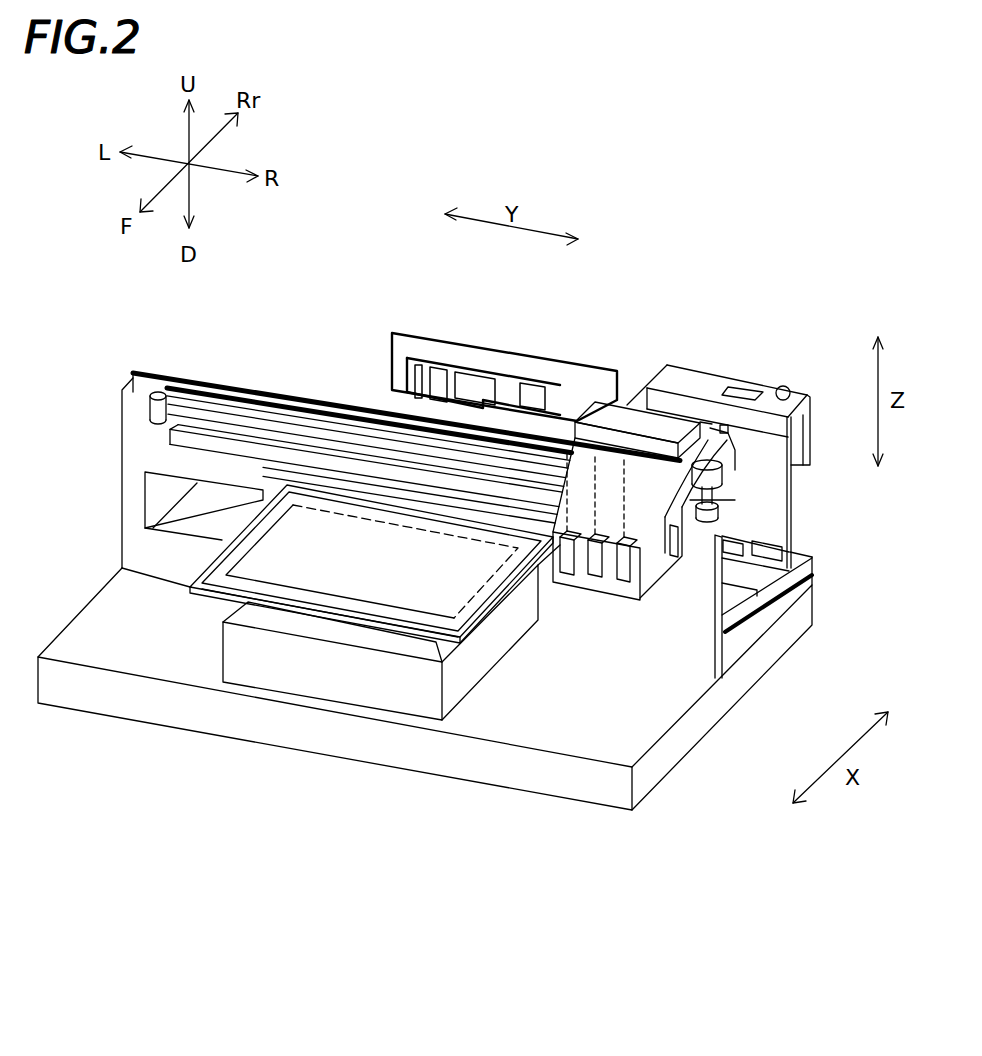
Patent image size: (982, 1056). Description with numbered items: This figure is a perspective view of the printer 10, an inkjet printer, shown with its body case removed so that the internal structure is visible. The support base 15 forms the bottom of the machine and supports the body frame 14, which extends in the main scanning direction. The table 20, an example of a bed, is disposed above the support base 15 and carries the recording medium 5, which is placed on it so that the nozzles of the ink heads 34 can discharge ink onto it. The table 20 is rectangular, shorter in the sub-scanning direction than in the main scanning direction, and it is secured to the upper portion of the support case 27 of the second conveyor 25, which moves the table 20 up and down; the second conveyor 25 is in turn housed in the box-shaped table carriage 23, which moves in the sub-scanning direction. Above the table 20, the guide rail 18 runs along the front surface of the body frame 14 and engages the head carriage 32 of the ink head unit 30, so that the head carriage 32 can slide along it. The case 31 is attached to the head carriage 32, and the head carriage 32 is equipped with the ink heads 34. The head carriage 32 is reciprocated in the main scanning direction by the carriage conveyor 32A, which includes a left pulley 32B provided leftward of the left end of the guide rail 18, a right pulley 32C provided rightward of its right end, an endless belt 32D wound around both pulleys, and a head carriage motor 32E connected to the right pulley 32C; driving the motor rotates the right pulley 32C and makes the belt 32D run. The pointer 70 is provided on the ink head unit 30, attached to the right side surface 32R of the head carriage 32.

The recording medium 5 is at (483, 630).
The printer 10 is at (737, 268).
The body frame 14 is at (120, 498).
The support base 15 is at (553, 797).
The guide rail 18 is at (170, 438).
The table 20 is at (270, 573).
The table carriage 23 is at (403, 682).
The second conveyor 25 is at (333, 672).
The support case 27 is at (285, 606).
The ink head unit 30 is at (715, 552).
The case 31 is at (655, 464).
The head carriage 32 is at (674, 578).
The carriage conveyor 32A is at (217, 398).
The left pulley 32B is at (156, 393).
The right pulley 32C is at (720, 496).
The endless belt 32D is at (308, 438).
The head carriage motor 32E is at (728, 425).
The right side surface 32R is at (709, 460).
The ink heads 34 is at (640, 540).
The pointer 70 is at (792, 569).